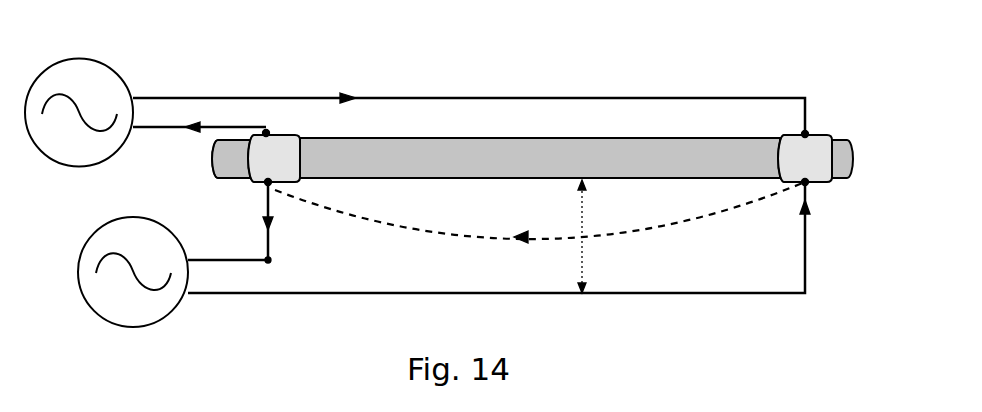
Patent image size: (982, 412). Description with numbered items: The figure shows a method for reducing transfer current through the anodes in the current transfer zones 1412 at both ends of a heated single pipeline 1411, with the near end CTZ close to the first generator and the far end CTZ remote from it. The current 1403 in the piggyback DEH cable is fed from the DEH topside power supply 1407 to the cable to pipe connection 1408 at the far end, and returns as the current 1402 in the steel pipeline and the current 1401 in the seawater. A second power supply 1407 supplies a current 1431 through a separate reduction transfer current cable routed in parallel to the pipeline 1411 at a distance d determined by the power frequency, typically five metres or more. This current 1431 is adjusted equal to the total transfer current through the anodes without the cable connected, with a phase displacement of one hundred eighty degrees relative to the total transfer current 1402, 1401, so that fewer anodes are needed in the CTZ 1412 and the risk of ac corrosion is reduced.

The current in seawater 1401 is at (540, 212).
The current in steel pipeline 1402 is at (408, 160).
The current in piggyback cable 1403 is at (469, 98).
The DEH topside power supply 1407 is at (106, 179).
The cable to pipe connection 1408 is at (565, 121).
The pipeline 1411 is at (584, 219).
The current transfer zone 1412 is at (549, 192).
The reduction transfer current 1431 is at (499, 237).